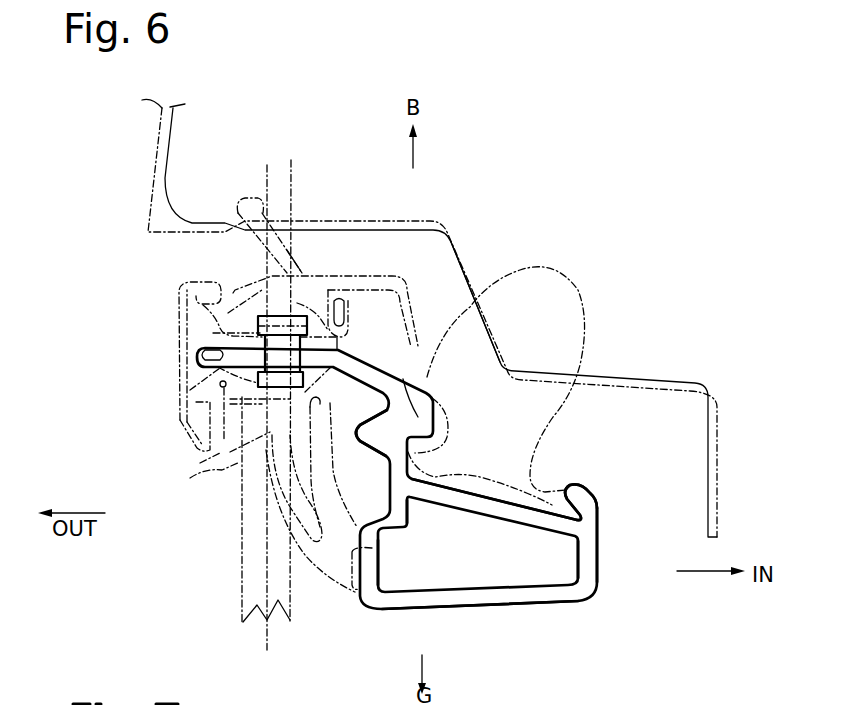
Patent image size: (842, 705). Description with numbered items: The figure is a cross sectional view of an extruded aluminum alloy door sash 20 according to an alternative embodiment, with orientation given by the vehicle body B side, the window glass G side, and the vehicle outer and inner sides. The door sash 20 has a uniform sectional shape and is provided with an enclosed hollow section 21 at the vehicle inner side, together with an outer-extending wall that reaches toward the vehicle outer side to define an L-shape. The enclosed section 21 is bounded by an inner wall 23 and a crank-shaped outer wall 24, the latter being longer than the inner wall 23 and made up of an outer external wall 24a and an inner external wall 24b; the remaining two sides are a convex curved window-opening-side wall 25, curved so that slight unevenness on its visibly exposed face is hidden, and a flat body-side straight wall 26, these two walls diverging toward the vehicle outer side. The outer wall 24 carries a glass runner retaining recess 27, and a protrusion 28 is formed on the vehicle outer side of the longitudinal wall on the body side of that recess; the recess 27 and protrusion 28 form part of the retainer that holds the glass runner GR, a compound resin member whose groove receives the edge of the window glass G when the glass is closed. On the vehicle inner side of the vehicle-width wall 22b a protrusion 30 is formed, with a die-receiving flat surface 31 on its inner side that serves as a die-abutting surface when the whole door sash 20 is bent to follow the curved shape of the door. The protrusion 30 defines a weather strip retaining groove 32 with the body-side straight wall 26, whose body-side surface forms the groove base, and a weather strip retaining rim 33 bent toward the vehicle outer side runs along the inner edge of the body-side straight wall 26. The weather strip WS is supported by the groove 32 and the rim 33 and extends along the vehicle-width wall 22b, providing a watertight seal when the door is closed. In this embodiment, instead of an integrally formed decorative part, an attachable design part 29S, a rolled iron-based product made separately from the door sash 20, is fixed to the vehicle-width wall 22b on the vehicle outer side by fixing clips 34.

The door sash 20 is at (600, 622).
The enclosed section 21 is at (563, 565).
The vehicle-width wall 22b is at (348, 354).
The inner wall 23 is at (592, 557).
The outer wall 24 is at (472, 518).
The outer external wall 24a is at (367, 565).
The inner external wall 24b is at (392, 514).
The window-opening-side wall 25 is at (473, 606).
The body-side straight wall 26 is at (527, 527).
The glass runner retaining recess 27 is at (382, 488).
The protrusion 28 is at (367, 437).
The attachable design part 29S is at (176, 323).
The protrusion 30 is at (404, 377).
The die-receiving flat surface 31 is at (441, 419).
The weather strip retaining groove 32 is at (417, 470).
The weather strip retaining rim 33 is at (572, 492).
The fixing clips 34 is at (300, 277).
The vehicle body B is at (362, 217).
The weather strip WS is at (572, 305).
The window glass G is at (253, 557).
The glass runner GR is at (205, 473).